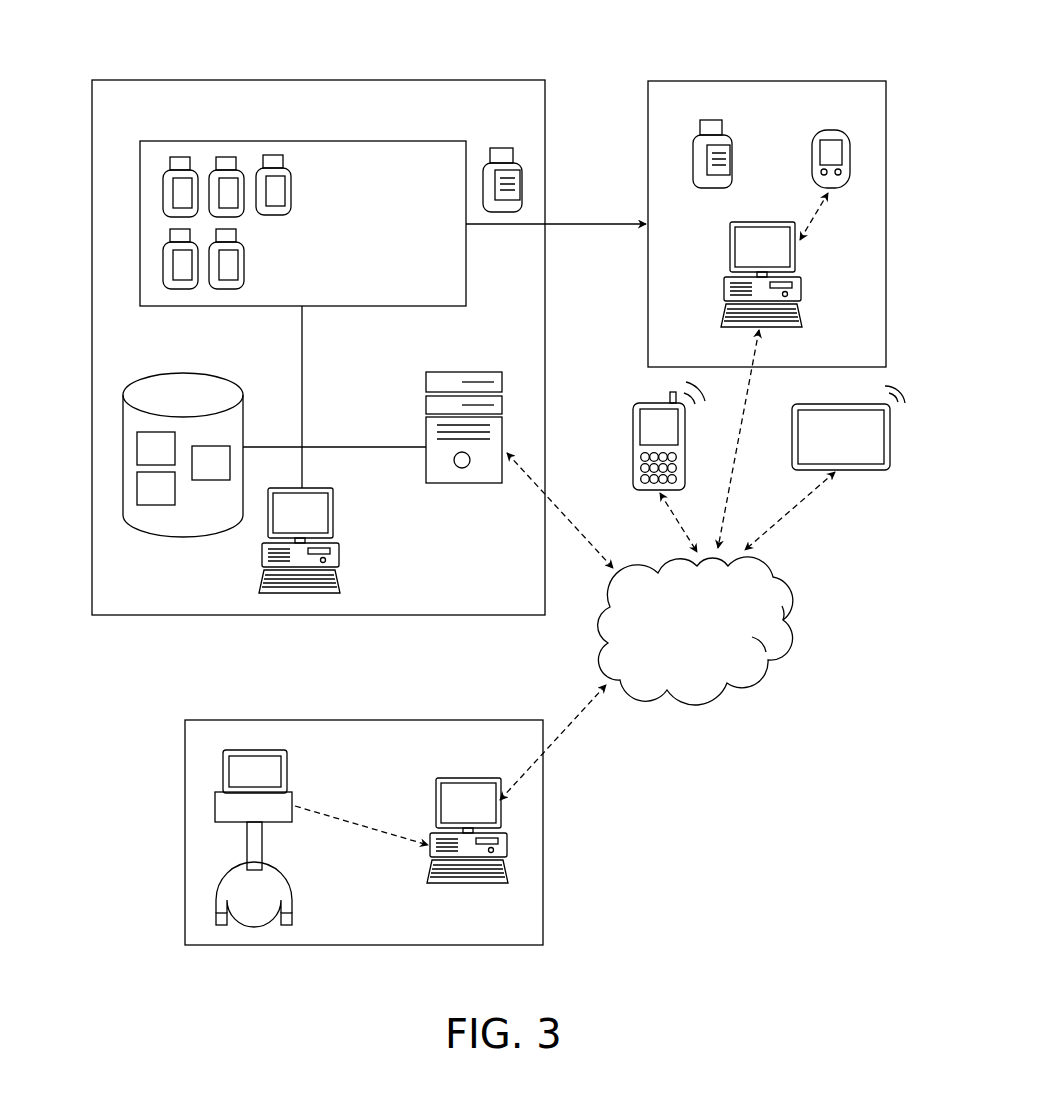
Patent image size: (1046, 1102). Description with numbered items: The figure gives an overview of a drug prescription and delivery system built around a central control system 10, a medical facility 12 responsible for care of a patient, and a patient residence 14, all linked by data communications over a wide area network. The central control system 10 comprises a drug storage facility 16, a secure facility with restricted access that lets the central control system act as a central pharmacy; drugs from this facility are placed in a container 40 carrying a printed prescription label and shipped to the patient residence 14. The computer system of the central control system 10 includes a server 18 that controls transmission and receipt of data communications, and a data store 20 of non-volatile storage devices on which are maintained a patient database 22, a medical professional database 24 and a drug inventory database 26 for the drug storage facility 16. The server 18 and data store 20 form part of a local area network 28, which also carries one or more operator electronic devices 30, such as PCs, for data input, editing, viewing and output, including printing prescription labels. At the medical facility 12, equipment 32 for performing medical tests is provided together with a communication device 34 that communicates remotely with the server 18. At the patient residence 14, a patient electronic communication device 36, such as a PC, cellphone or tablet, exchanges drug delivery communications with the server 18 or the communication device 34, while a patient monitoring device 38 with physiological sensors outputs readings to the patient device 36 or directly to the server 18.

The central control system 10 is at (191, 80).
The medical facility 12 is at (544, 907).
The patient residence 14 is at (712, 81).
The drug storage facility 16 is at (322, 141).
The server 18 is at (503, 402).
The data store 20 is at (122, 487).
The patient database 22 is at (210, 481).
The medical professional database 24 is at (158, 503).
The drug inventory database 26 is at (141, 433).
The local area network 28 is at (352, 447).
The electronic device 30 is at (339, 556).
The equipment for performing a medical test 32 is at (228, 822).
The communication device 34 is at (503, 848).
The patient electronic communication device 36 is at (801, 292).
The patient monitoring device 38 is at (838, 130).
The container 40 is at (522, 180).